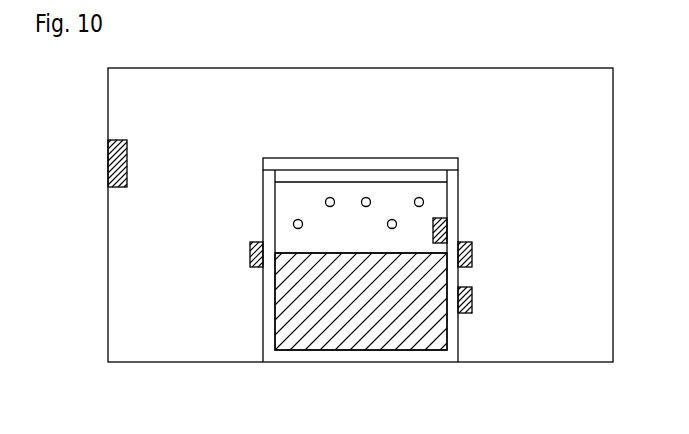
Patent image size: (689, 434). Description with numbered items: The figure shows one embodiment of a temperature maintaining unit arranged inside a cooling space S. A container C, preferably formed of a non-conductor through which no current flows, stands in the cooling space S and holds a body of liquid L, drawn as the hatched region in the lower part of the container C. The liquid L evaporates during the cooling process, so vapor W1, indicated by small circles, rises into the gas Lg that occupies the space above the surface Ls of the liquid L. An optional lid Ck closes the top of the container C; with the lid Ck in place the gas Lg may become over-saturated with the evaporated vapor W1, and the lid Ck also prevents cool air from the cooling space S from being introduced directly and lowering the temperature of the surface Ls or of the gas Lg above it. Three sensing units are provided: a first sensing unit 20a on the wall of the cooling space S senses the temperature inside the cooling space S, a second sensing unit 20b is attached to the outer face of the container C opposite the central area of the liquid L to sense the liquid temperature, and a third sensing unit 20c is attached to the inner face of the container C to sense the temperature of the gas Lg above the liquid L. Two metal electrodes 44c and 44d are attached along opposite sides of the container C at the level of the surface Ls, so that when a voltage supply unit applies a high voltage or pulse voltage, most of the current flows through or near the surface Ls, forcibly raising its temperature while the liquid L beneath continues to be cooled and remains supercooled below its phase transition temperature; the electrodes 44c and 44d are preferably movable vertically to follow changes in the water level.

The cooling space S is at (360, 215).
The container C is at (453, 333).
The lid Ck is at (447, 158).
The gas Lg is at (361, 208).
The vapor W1 is at (330, 197).
The surface of the liquid Ls is at (292, 253).
The liquid L is at (296, 322).
The first sensing unit 20a is at (108, 157).
The second sensing unit 20b is at (472, 300).
The third sensing unit 20c is at (446, 225).
The metal electrode 44c is at (250, 253).
The metal electrode 44d is at (472, 251).